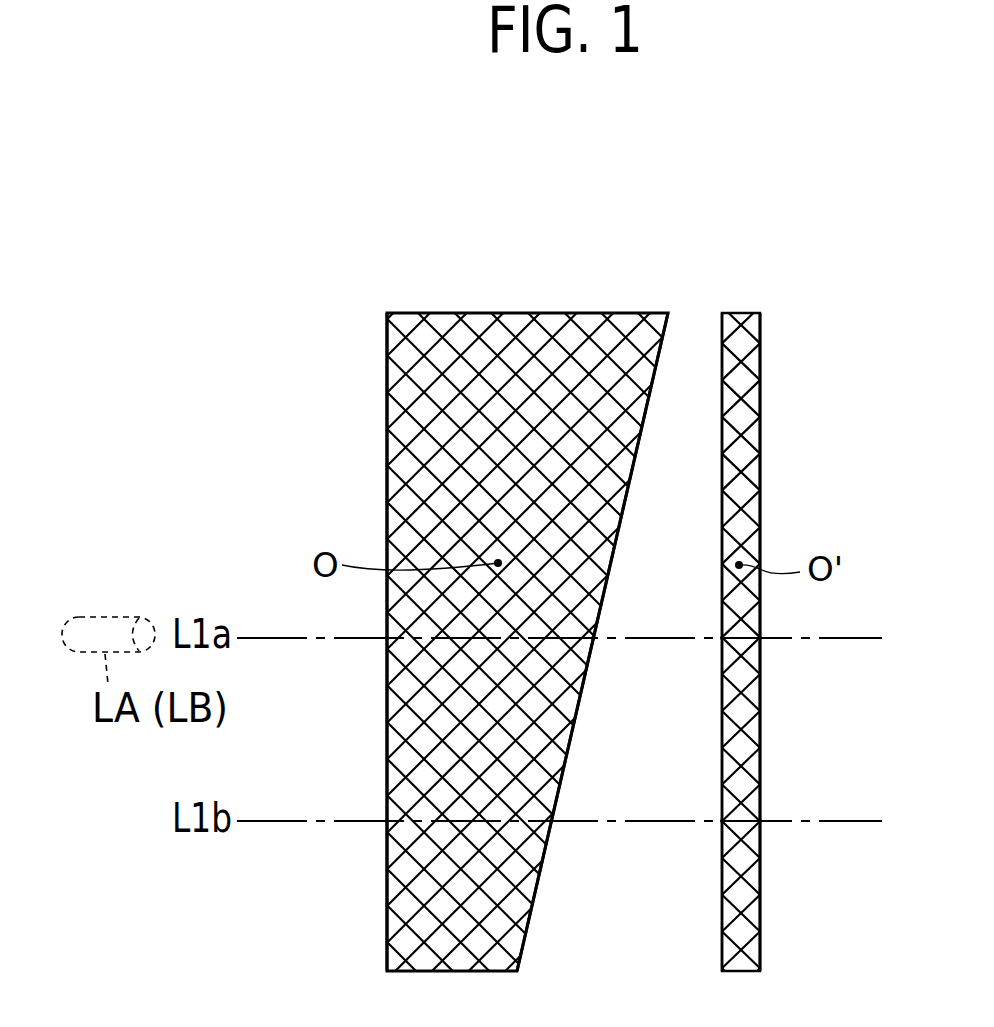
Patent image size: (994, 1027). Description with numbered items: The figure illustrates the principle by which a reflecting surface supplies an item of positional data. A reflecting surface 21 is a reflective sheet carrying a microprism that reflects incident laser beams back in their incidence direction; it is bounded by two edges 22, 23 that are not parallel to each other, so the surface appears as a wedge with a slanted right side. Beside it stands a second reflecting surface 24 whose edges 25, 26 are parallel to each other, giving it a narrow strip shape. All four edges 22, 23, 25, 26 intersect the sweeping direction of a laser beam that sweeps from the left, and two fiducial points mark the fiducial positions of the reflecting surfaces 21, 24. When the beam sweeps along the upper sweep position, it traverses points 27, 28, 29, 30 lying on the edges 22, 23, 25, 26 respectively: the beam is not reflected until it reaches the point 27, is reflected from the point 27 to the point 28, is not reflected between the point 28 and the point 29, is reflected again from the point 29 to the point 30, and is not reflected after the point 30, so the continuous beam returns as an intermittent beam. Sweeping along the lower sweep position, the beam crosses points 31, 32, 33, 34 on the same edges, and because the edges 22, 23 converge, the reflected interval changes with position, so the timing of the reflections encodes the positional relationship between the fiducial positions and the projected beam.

The reflecting surface 21 is at (410, 366).
The edge 22 is at (387, 459).
The edge 23 is at (537, 884).
The reflecting surface 24 is at (741, 378).
The edge 25 is at (722, 750).
The edge 26 is at (760, 732).
The point 27 is at (386, 638).
The point 28 is at (594, 637).
The point 29 is at (720, 640).
The point 30 is at (762, 637).
The point 31 is at (387, 822).
The point 32 is at (555, 820).
The point 33 is at (720, 823).
The point 34 is at (762, 823).